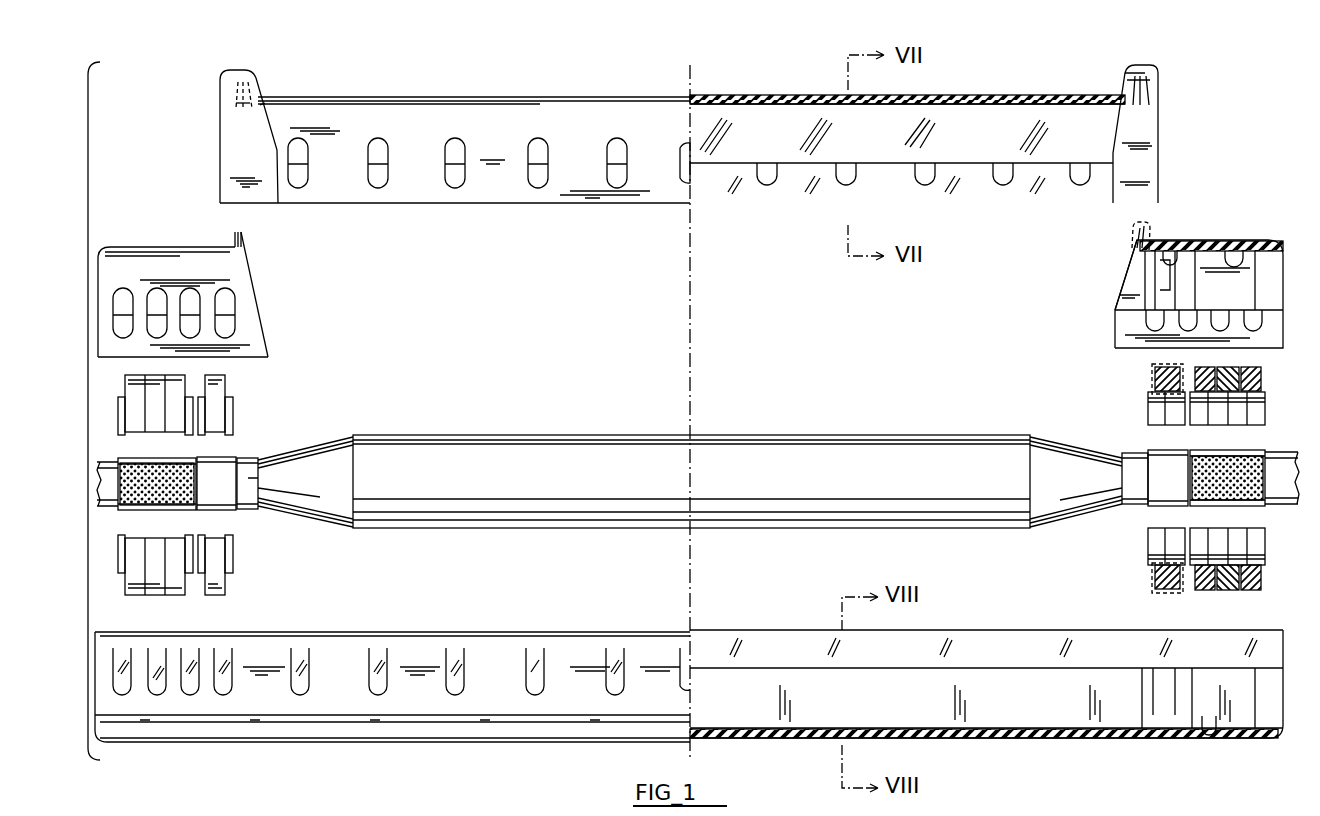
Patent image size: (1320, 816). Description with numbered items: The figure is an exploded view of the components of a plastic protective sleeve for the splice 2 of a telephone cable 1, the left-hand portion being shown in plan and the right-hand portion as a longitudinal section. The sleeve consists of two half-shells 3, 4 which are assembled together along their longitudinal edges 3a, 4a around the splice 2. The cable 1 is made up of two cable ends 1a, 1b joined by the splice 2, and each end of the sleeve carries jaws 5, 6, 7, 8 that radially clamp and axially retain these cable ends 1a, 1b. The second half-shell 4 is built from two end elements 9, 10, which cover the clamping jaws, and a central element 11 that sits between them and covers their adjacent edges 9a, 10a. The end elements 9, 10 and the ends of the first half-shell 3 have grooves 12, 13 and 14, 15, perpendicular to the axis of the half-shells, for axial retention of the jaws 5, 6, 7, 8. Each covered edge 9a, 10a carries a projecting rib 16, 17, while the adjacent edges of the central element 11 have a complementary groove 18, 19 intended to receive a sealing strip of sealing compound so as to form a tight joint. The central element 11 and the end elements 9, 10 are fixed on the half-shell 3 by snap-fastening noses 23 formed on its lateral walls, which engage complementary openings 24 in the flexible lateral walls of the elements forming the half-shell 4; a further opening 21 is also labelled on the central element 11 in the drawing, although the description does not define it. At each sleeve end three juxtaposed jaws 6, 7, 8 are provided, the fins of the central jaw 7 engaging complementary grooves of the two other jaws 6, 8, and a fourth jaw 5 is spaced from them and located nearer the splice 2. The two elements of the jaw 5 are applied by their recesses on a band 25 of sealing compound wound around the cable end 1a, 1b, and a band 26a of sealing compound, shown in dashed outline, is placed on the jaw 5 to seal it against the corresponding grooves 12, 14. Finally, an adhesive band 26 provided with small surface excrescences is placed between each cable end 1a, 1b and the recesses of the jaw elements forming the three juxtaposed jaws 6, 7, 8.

The telephone cable 1 is at (262, 448).
The cable end 1a is at (250, 504).
The cable end 1b is at (1135, 492).
The splice 2 is at (768, 436).
The first half-shell 3 is at (558, 632).
The longitudinal edge 3a is at (610, 631).
The second half-shell 4 is at (616, 207).
The longitudinal edge 4a is at (736, 205).
The fourth jaw 5 is at (1148, 567).
The jaw 6 is at (1190, 582).
The central jaw 7 is at (1220, 587).
The jaw 8 is at (1258, 585).
The end element 9 is at (138, 247).
The edge 9a is at (255, 278).
The end element 10 is at (1228, 243).
The edge 10a is at (1122, 278).
The central element 11 is at (568, 97).
The groove 12 is at (1172, 258).
The groove 13 is at (1250, 256).
The groove 14 is at (1155, 726).
The groove 15 is at (1210, 726).
The projecting rib 16 is at (242, 232).
The projecting rib 17 is at (1130, 242).
The groove 18 is at (242, 78).
The groove 19 is at (1150, 97).
The slot 21 is at (381, 180).
The snap-fastening nose 23 is at (300, 690).
The opening 24 is at (457, 178).
The band of sealing compound 25 is at (222, 457).
The adhesive band 26 is at (135, 502).
The band of sealing compound 26a is at (1150, 364).